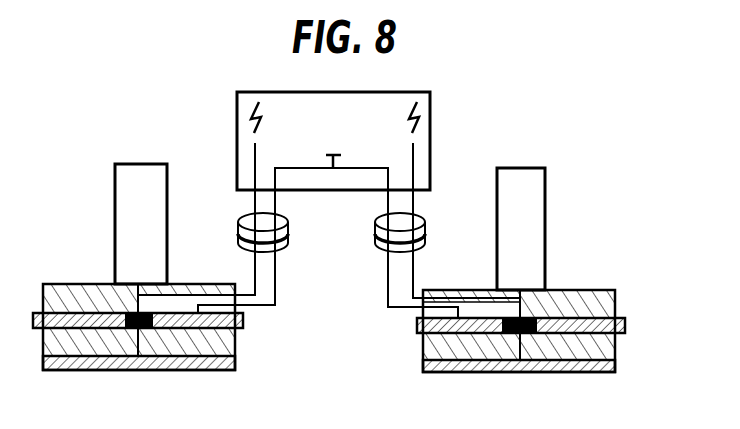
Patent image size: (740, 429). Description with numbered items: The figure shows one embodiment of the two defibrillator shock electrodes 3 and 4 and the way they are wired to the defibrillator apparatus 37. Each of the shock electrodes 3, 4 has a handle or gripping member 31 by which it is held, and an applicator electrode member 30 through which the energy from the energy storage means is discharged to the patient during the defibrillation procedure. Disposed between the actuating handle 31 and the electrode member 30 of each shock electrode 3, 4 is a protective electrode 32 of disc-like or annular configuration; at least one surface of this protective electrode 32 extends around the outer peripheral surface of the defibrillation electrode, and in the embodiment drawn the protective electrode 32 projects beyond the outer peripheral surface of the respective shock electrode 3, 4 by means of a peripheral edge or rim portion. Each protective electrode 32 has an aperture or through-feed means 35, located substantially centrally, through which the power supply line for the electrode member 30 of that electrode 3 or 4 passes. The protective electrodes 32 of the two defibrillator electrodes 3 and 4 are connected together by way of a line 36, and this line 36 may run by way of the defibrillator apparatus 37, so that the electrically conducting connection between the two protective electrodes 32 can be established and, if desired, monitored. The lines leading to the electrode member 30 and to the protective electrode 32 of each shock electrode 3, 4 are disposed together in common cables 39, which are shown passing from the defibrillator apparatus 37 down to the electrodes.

The shock electrode 3 is at (353, 275).
The shock electrode 4 is at (506, 384).
The applicator electrode member 30 is at (236, 367).
The handle or gripping member 31 is at (167, 170).
The protective electrode 32 is at (243, 321).
The aperture or through-feed means 35 is at (533, 315).
The line 36 is at (382, 150).
The defibrillator apparatus 37 is at (398, 97).
The common cable 39 is at (425, 236).